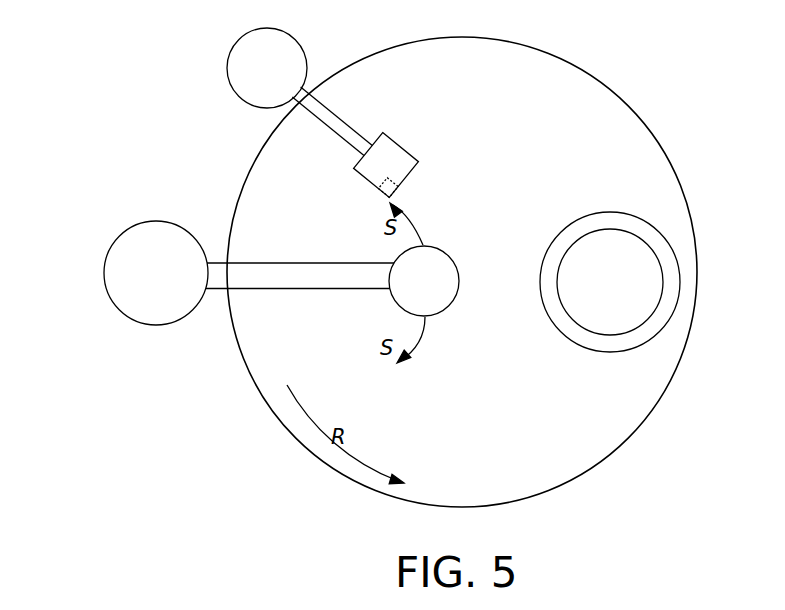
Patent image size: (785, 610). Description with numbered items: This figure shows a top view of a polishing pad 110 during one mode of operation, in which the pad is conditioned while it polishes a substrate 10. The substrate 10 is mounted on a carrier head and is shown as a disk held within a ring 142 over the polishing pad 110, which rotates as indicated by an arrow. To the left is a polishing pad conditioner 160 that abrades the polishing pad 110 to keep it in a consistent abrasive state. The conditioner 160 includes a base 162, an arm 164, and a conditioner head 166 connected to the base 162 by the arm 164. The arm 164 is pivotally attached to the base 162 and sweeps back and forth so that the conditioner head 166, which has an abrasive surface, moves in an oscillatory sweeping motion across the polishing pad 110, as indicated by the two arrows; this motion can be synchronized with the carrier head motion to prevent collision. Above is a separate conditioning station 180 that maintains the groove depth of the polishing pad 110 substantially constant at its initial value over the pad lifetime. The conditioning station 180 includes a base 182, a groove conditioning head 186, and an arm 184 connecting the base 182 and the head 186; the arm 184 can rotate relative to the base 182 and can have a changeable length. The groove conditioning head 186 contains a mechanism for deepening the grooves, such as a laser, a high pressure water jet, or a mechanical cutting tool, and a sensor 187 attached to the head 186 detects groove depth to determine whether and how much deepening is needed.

The substrate 10 is at (585, 326).
The polishing pad 110 is at (462, 272).
The substrate carrier ring 142 is at (630, 352).
The polishing pad conditioner 160 is at (276, 289).
The base 162 is at (160, 325).
The arm 164 is at (330, 290).
The conditioner head 166 is at (448, 253).
The conditioning station 180 is at (304, 110).
The base 182 is at (298, 42).
The arm 184 is at (333, 127).
The groove conditioning head 186 is at (398, 147).
The sensor 187 is at (401, 188).